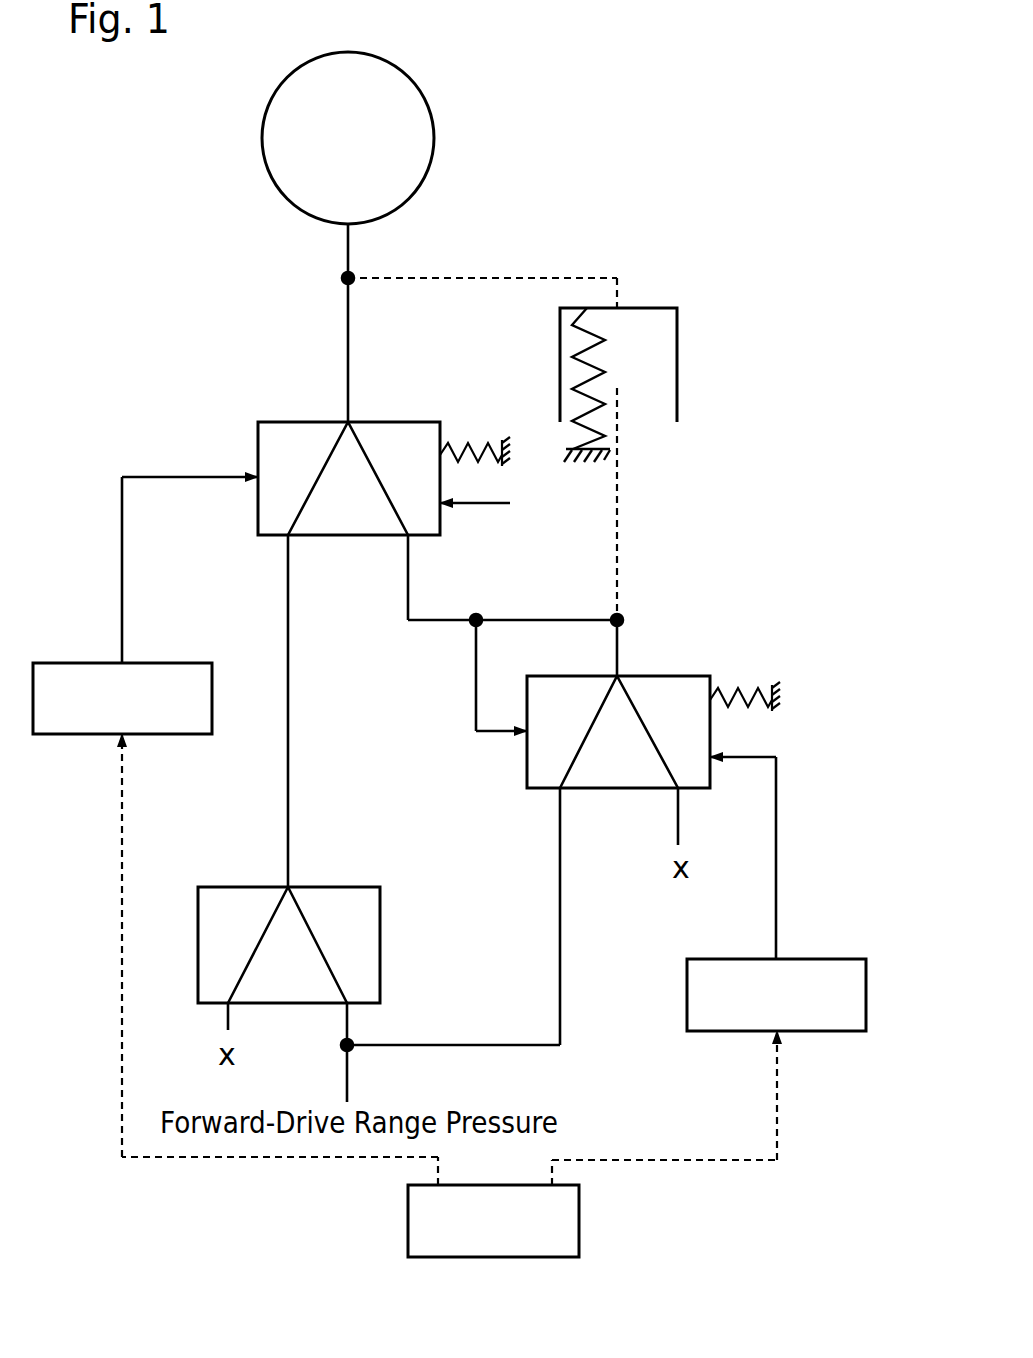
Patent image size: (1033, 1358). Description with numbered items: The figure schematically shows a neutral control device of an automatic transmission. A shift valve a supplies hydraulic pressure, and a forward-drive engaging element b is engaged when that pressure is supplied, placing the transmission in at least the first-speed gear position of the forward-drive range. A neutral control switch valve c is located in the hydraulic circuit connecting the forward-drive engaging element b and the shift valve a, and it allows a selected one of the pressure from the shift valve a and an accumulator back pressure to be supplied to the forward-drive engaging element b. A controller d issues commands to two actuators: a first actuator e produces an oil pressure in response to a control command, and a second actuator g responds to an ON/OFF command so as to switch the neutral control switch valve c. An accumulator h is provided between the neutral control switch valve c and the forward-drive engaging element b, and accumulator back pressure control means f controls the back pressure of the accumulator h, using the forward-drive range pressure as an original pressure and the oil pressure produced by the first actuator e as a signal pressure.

The shift valve a is at (318, 887).
The forward-drive engaging element b is at (427, 102).
The neutral control switch valve c is at (324, 422).
The controller d is at (580, 1220).
The first actuator e is at (810, 958).
The accumulator back pressure control means f is at (647, 676).
The second actuator g is at (145, 663).
The accumulator h is at (648, 308).